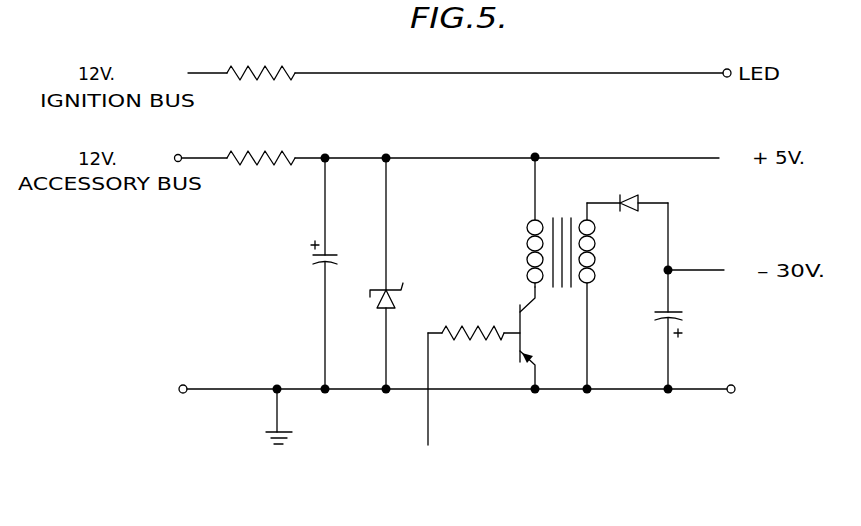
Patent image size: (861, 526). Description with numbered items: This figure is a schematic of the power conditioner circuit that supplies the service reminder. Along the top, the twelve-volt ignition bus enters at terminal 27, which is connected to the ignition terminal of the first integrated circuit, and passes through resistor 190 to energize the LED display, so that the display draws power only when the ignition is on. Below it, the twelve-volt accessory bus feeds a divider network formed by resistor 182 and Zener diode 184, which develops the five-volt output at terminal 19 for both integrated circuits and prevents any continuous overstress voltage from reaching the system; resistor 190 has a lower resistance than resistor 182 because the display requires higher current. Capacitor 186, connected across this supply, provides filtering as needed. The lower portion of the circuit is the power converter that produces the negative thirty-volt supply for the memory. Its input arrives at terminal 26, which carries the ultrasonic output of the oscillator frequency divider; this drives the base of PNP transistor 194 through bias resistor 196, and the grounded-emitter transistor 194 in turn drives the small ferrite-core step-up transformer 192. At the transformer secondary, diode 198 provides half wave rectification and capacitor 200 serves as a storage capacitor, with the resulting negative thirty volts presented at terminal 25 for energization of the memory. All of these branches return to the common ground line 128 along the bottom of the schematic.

The terminal 27 is at (194, 73).
The terminal 19 is at (732, 157).
The terminal 25 is at (707, 270).
The terminal 26 is at (430, 403).
The ground bus 128 is at (252, 408).
The resistor 182 is at (256, 155).
The Zener diode 184 is at (395, 299).
The capacitor 186 is at (322, 262).
The resistor 190 is at (276, 78).
The step-up transformer 192 is at (558, 208).
The transistor 194 is at (524, 339).
The resistor 196 is at (450, 341).
The diode 198 is at (626, 197).
The capacitor 200 is at (683, 316).